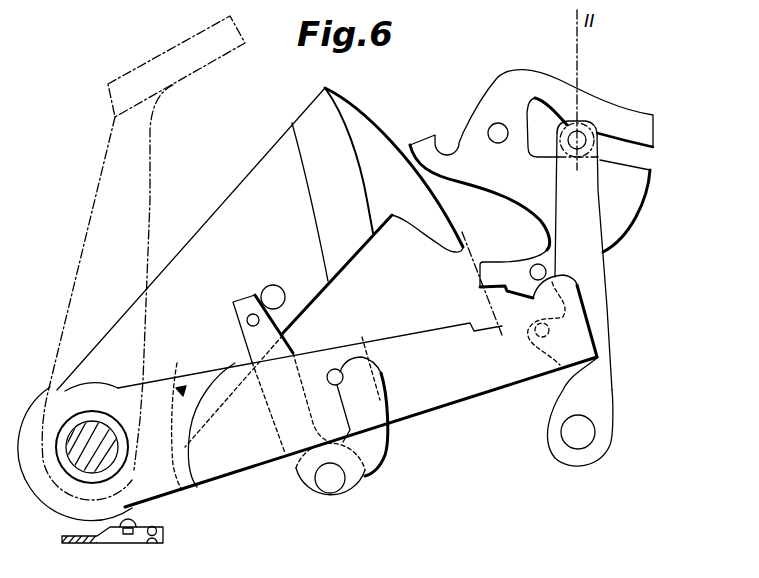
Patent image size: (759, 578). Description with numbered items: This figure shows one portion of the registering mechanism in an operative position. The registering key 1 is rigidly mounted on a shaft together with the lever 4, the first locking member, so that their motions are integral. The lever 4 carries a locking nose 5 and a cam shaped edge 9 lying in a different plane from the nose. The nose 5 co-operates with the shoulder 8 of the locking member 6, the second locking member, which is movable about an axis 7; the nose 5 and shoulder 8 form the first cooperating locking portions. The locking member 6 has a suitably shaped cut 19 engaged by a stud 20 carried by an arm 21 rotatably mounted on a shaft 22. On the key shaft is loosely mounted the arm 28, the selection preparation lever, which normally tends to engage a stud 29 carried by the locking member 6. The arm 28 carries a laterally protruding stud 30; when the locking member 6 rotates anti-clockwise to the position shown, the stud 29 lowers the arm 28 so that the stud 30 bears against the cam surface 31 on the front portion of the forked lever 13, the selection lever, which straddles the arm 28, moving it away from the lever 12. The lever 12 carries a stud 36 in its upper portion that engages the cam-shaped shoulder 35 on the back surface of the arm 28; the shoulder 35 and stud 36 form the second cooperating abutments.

The registering key 1 is at (188, 48).
The lever 4 is at (275, 152).
The locking nose 5 is at (452, 232).
The locking member 6 is at (643, 123).
The axis 7 is at (490, 128).
The shoulder 8 is at (539, 240).
The cam shaped edge 9 is at (358, 152).
The lever 12 is at (293, 462).
The forked lever 13 is at (373, 440).
The cut 19 is at (533, 103).
The stud 20 is at (580, 137).
The arm 21 is at (600, 297).
The shaft 22 is at (584, 438).
The arm 28 is at (407, 333).
The stud 29 is at (533, 269).
The stud 30 is at (328, 371).
The cam surface 31 is at (347, 372).
The cam-shaped shoulder 35 is at (203, 414).
The stud 36 is at (250, 318).